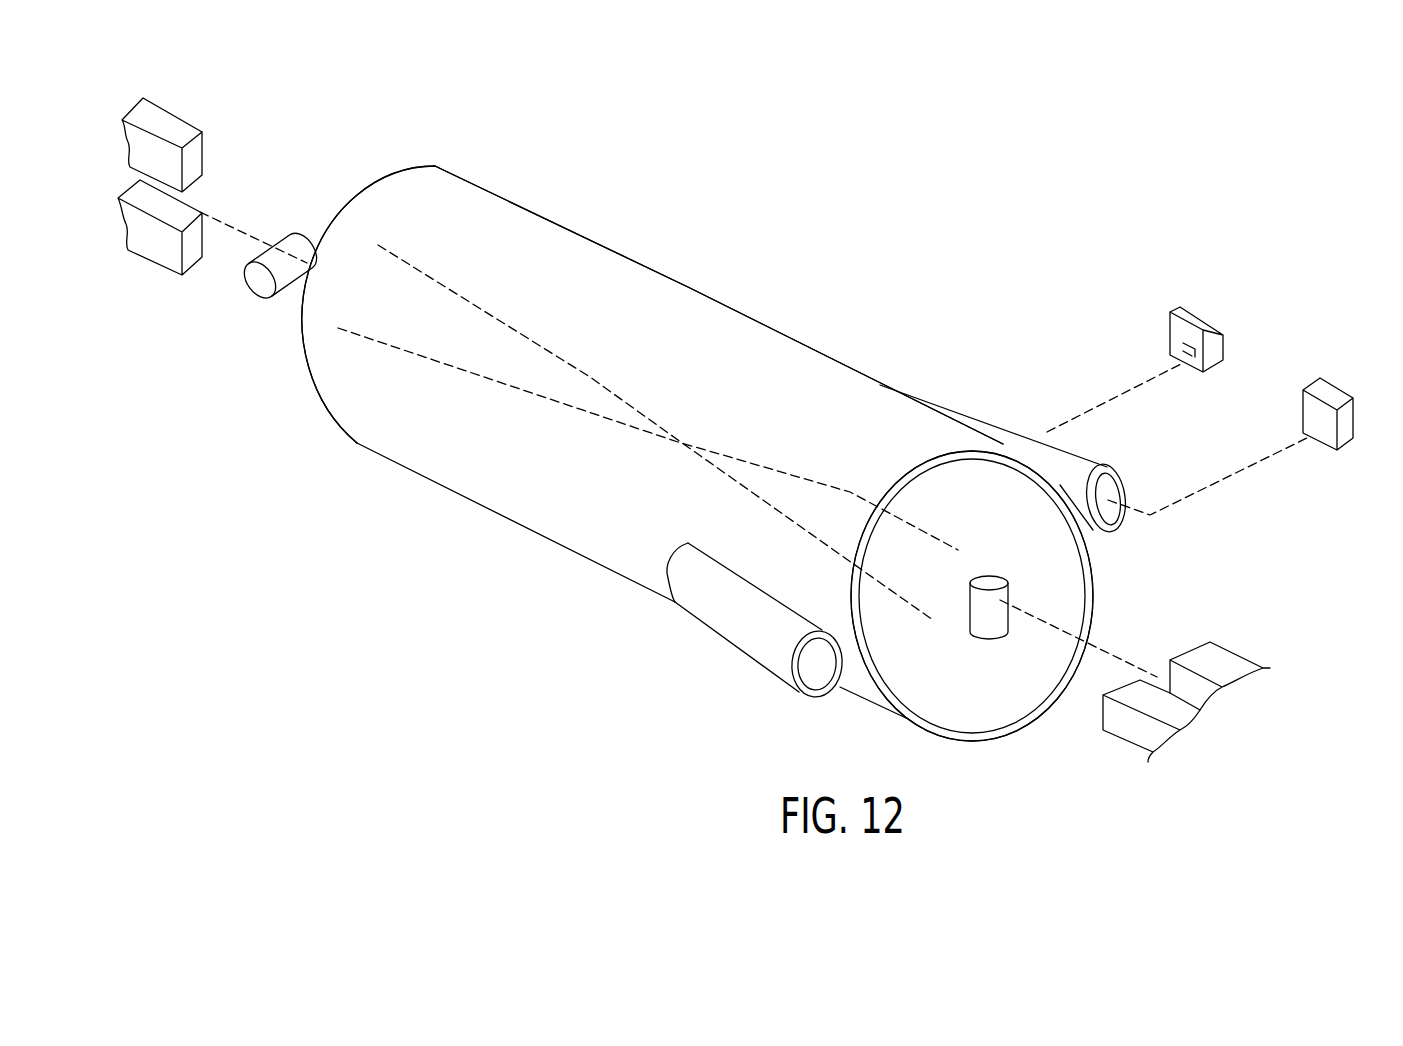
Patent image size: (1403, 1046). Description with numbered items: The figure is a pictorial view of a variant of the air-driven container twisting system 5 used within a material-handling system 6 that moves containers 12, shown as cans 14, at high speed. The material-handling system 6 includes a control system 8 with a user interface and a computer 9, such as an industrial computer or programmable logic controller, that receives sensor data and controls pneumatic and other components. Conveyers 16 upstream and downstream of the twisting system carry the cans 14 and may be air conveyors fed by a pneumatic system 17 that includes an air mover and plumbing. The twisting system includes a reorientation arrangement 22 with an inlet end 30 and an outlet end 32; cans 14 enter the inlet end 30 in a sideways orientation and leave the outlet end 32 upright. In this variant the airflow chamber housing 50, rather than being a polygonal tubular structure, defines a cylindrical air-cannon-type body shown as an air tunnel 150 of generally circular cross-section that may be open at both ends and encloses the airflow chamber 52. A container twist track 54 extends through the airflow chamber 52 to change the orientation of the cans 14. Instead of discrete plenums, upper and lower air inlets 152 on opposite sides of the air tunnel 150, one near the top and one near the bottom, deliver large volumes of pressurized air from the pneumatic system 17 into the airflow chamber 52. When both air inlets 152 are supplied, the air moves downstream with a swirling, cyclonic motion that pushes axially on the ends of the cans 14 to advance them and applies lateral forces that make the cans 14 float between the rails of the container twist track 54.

The air-driven container twisting system 5 is at (696, 237).
The material-handling system 6 is at (965, 208).
The control system 8 is at (1211, 312).
The computer 9 is at (1177, 336).
The containers 12 is at (257, 332).
The cans 14 is at (242, 297).
The conveyers 16 is at (196, 106).
The pneumatic system 17 is at (1354, 380).
The reorientation arrangement 22 is at (611, 346).
The inlet end 30 is at (999, 757).
The outlet end 32 is at (344, 476).
The airflow chamber housing 50 is at (815, 336).
The airflow chamber 52 is at (937, 485).
The container twist track 54 is at (526, 316).
The air tunnel 150 is at (499, 212).
The upper and lower air inlets 152 is at (966, 404).